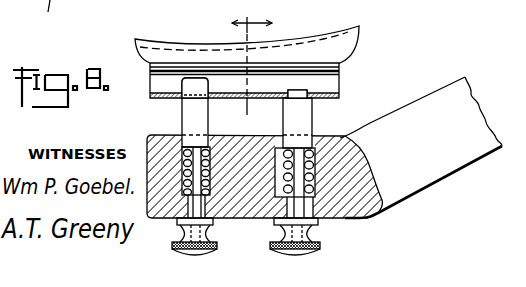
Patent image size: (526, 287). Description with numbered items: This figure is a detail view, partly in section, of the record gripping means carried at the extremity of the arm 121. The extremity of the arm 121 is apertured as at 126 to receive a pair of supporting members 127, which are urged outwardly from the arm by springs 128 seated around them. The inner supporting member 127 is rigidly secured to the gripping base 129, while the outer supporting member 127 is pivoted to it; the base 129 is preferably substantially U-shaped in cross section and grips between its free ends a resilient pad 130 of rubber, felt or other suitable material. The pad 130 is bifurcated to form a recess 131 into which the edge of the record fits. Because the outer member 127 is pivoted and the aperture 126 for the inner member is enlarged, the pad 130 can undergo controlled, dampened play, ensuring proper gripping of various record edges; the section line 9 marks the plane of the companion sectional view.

The arm 121 is at (443, 176).
The aperture 126 is at (306, 212).
The supporting member 127 is at (183, 124).
The spring 128 is at (183, 165).
The gripping base 129 is at (338, 89).
The resilient pad 130 is at (358, 42).
The recess 131 is at (327, 33).
The section line 9- 9 is at (252, 59).